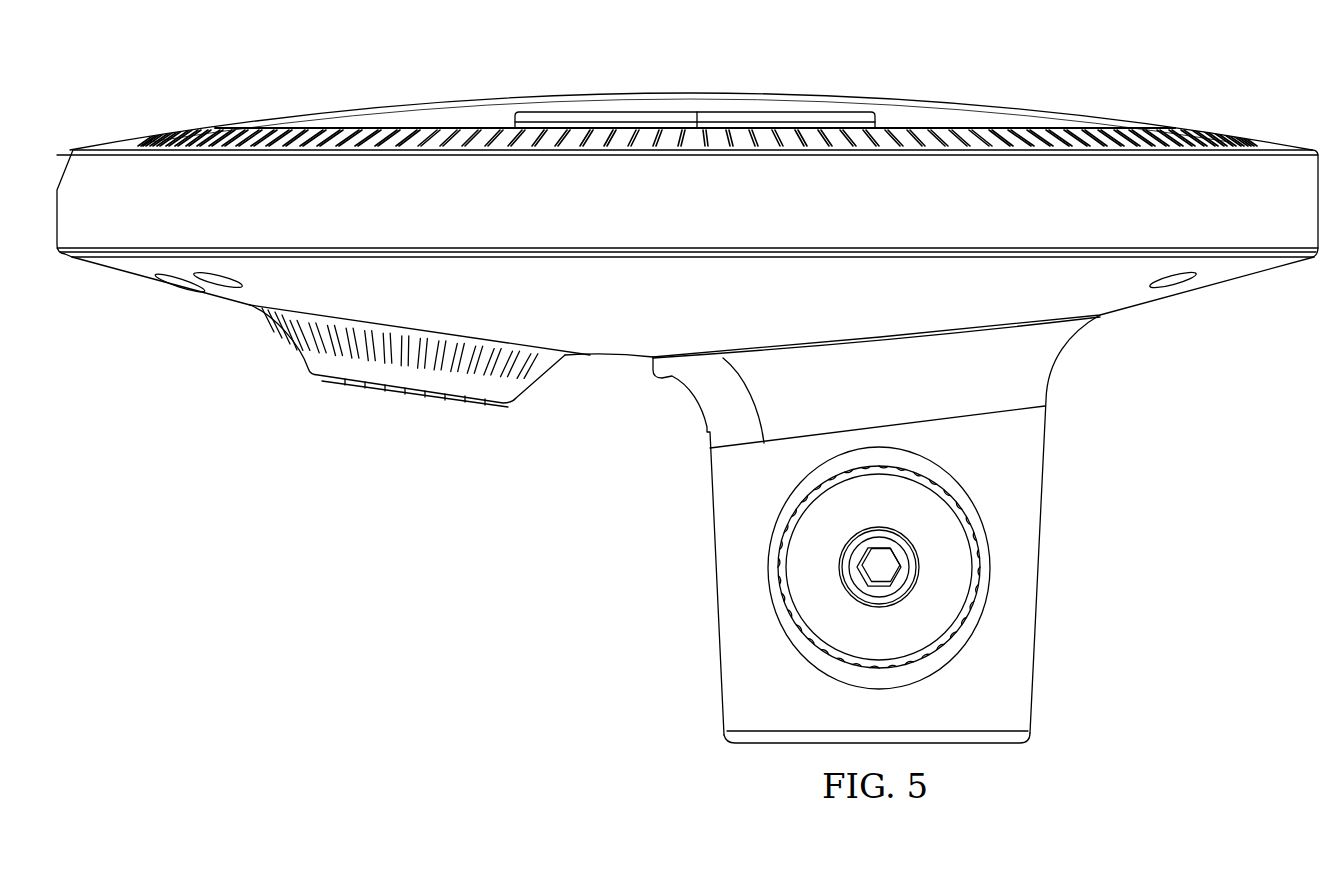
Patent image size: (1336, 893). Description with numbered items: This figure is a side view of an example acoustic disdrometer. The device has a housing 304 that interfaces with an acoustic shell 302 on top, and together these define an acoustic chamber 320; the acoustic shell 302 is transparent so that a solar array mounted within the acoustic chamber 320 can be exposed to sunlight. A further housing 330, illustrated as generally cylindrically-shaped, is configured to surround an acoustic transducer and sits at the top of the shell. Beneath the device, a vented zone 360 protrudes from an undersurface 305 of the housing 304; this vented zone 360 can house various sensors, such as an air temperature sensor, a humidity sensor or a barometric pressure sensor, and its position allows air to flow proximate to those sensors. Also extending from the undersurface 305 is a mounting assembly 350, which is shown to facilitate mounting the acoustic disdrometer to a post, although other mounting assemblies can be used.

The acoustic shell 302 is at (973, 103).
The acoustic chamber 320 is at (455, 120).
The housing 330 is at (603, 113).
The housing 304 is at (1117, 305).
The undersurface 305 is at (613, 347).
The mounting assembly 350 is at (1075, 610).
The vented zone 360 is at (380, 399).